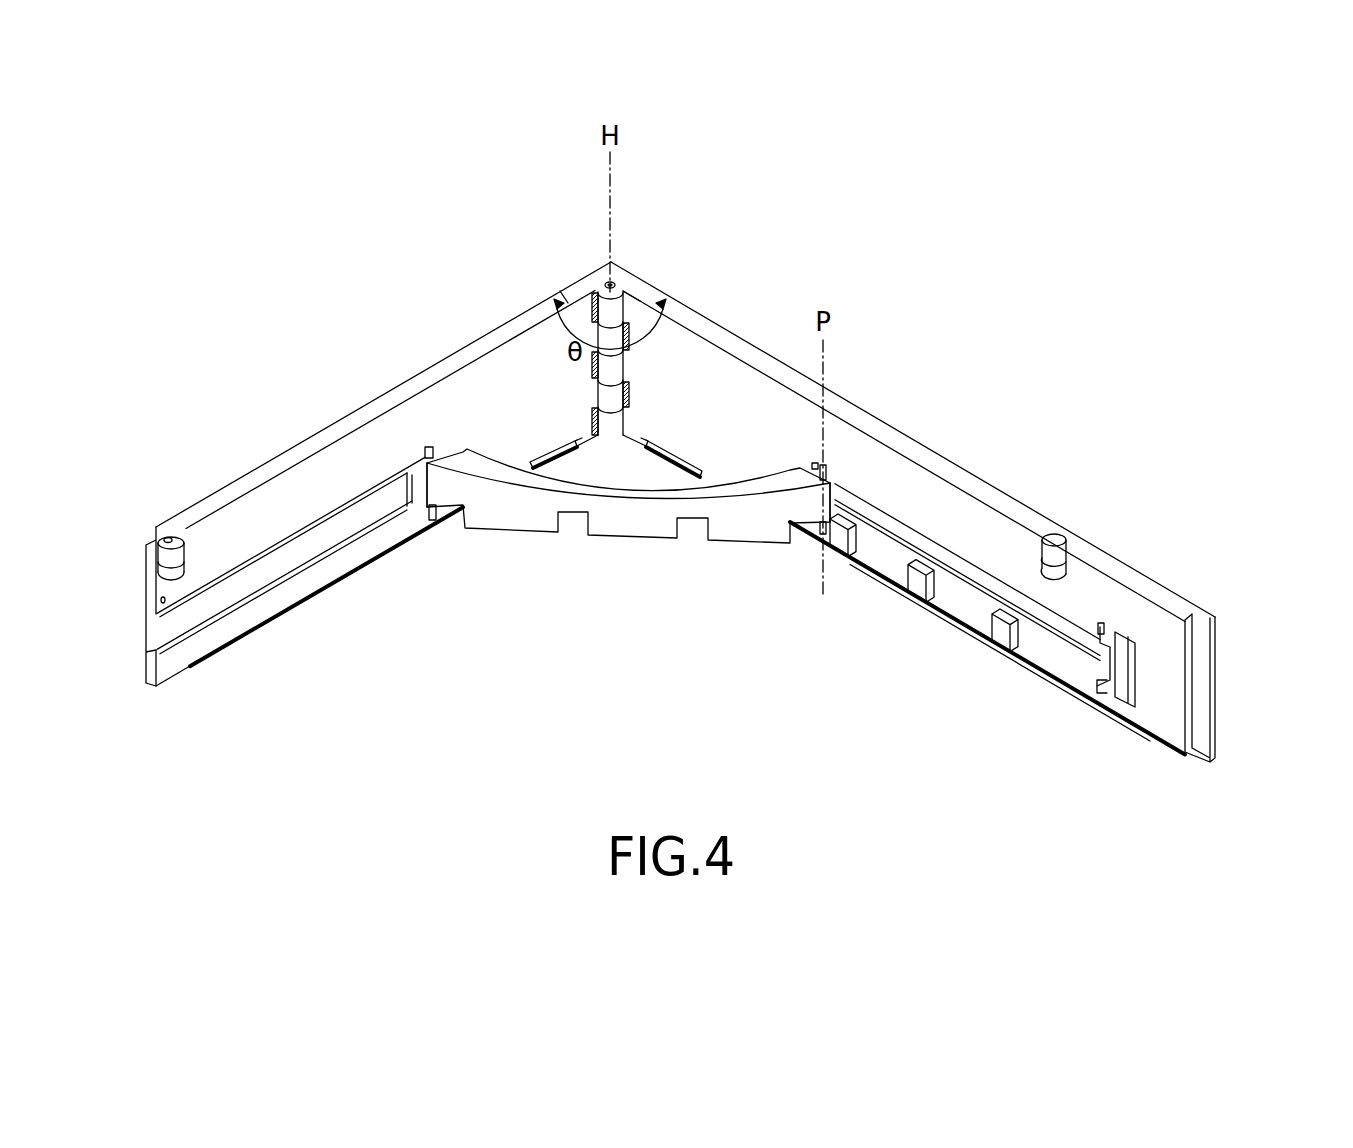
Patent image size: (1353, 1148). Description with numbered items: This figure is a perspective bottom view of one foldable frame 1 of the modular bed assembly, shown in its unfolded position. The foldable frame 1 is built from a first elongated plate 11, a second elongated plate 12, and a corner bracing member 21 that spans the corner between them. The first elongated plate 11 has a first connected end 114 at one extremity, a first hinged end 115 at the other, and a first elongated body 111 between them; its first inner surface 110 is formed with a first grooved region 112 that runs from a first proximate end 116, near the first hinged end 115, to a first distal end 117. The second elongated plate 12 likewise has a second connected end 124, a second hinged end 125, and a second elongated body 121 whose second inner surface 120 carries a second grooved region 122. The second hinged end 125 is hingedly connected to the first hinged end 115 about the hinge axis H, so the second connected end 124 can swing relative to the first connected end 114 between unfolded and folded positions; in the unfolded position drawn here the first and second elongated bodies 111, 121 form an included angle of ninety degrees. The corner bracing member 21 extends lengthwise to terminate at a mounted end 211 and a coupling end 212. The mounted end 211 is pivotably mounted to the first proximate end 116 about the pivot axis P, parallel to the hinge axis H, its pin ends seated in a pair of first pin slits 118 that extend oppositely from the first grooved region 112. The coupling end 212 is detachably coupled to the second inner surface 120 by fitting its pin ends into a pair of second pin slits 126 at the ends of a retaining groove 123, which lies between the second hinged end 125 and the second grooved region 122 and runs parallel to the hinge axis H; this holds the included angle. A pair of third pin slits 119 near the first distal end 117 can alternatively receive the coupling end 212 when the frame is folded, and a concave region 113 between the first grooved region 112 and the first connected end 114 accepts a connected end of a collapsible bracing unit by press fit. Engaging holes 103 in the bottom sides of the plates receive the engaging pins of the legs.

The foldable frame 1 is at (591, 262).
The first elongated plate 11 is at (885, 422).
The second elongated plate 12 is at (318, 432).
The corner bracing member 21 is at (633, 541).
The engaging holes 103 is at (614, 286).
The first inner surface 110 is at (730, 372).
The first elongated body 111 is at (1160, 718).
The first grooved region 112 is at (965, 575).
The concave region 113 is at (1122, 700).
The first connected end 114 is at (1200, 696).
The first hinged end 115 is at (625, 290).
The first proximate end 116 is at (810, 467).
The first distal end 117 is at (1112, 655).
The first pin slits 118 is at (827, 466).
The third pin slits 119 is at (1102, 622).
The second inner surface 120 is at (490, 380).
The second elongated body 121 is at (310, 582).
The second grooved region 122 is at (218, 600).
The retaining groove 123 is at (428, 455).
The second connected end 124 is at (150, 538).
The second hinged end 125 is at (570, 298).
The second pin slits 126 is at (428, 470).
The mounted end 211 is at (840, 497).
The coupling end 212 is at (426, 522).